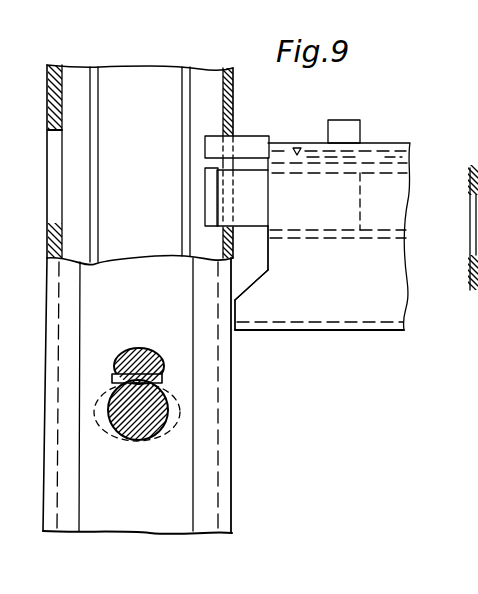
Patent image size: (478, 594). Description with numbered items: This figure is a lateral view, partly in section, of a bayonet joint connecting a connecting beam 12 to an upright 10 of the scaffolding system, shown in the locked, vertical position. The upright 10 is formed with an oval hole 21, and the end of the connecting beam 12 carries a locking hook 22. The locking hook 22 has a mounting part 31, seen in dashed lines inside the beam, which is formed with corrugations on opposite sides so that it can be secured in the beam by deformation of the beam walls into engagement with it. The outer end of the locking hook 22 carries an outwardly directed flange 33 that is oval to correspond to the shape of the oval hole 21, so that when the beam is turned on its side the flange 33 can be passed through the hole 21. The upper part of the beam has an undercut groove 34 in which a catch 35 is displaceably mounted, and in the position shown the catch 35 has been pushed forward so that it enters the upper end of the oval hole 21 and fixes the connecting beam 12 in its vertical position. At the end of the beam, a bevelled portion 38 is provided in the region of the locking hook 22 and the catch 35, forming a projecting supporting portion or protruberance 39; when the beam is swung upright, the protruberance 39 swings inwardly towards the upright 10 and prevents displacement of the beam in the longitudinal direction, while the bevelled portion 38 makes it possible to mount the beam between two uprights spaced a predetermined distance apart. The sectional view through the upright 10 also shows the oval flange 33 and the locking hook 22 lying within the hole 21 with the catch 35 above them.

The upright 10 is at (232, 474).
The connecting beam 12 is at (355, 307).
The hole 21 is at (55, 167).
The locking hook 22 is at (250, 193).
The mounting part 31 is at (353, 200).
The flange 33 is at (210, 192).
The undercut groove 34 is at (380, 152).
The catch 35 is at (250, 147).
The bevelled portion 38 is at (267, 248).
The protruberance 39 is at (258, 298).